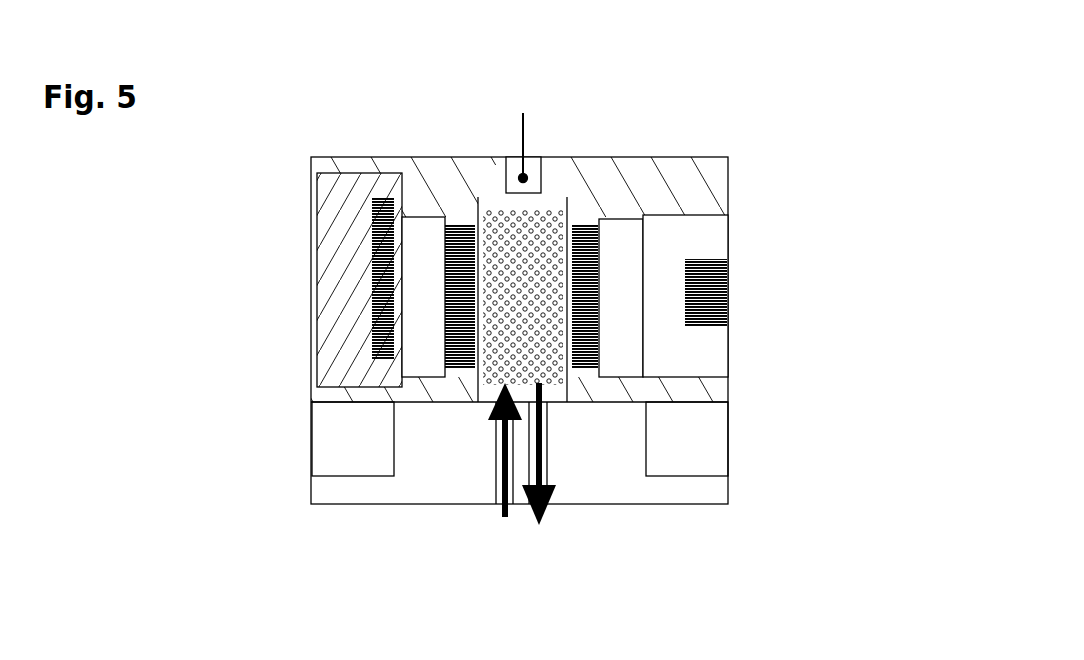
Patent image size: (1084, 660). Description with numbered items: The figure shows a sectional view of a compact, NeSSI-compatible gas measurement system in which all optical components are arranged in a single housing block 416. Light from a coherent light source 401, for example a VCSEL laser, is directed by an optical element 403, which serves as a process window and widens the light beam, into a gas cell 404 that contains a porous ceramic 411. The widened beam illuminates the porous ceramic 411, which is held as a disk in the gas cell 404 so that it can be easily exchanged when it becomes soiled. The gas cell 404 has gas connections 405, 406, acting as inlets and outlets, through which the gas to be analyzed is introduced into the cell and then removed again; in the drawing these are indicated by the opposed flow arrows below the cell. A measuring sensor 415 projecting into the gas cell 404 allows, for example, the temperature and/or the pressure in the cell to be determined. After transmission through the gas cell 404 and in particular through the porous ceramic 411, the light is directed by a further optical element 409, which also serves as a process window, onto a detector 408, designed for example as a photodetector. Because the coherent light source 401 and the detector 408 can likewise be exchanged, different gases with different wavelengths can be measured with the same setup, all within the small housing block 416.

The coherent light source 401 is at (703, 296).
The optical element 403 is at (585, 296).
The gas cell 404 is at (560, 196).
The gas connection 405 is at (505, 524).
The gas connection 406 is at (553, 510).
The detector 408 is at (375, 270).
The further optical element 409 is at (458, 298).
The porous ceramic 411 is at (515, 258).
The measuring sensor 415 is at (523, 112).
The housing block 416 is at (706, 160).